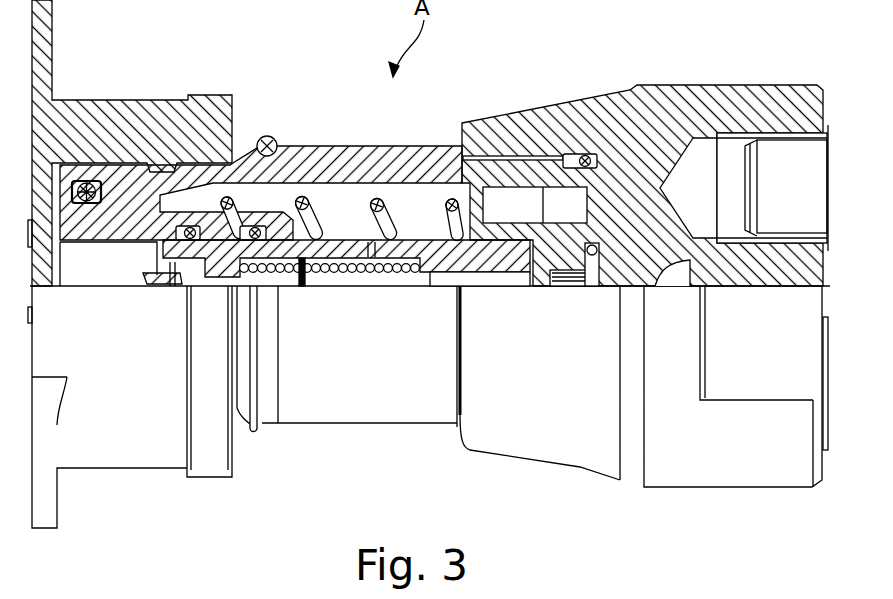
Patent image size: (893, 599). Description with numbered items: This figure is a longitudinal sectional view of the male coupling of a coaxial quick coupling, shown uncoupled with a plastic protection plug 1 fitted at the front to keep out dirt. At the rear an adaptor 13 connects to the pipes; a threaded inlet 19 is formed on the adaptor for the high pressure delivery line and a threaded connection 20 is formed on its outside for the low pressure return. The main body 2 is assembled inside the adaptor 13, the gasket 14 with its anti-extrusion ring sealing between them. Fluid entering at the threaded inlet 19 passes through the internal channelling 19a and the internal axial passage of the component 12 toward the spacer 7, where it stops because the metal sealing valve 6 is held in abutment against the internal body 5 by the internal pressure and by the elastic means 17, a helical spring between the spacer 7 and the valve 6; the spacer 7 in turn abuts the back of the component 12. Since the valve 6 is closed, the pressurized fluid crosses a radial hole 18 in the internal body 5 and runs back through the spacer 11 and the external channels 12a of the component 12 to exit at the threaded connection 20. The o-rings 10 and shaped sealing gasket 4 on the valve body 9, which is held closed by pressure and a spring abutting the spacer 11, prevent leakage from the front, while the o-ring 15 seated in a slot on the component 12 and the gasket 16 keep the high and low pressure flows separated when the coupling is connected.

The protection plug 1 is at (140, 128).
The main body 2 is at (303, 160).
The shaped sealing gasket 4 is at (82, 180).
The internal body 5 is at (158, 254).
The metal sealing valve 6 is at (153, 288).
The spacer 7 is at (355, 281).
The valve body 9 is at (165, 168).
The o-rings 10 is at (230, 283).
The spacer 11 is at (493, 158).
The component for axial channelling 12 is at (557, 281).
The external channels 12a is at (528, 207).
The adaptor 13 is at (640, 128).
The gasket 14 is at (582, 156).
The o-ring 15 is at (590, 287).
The gasket 16 is at (523, 281).
The elastic means 17 is at (303, 281).
The radial hole 18 is at (387, 281).
The threaded inlet 19 is at (737, 170).
The internal channelling 19a is at (680, 262).
The threaded connection 20 is at (823, 348).